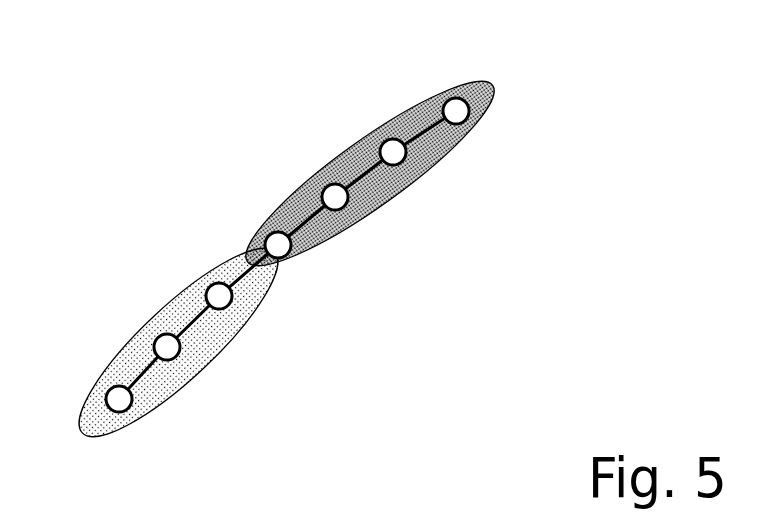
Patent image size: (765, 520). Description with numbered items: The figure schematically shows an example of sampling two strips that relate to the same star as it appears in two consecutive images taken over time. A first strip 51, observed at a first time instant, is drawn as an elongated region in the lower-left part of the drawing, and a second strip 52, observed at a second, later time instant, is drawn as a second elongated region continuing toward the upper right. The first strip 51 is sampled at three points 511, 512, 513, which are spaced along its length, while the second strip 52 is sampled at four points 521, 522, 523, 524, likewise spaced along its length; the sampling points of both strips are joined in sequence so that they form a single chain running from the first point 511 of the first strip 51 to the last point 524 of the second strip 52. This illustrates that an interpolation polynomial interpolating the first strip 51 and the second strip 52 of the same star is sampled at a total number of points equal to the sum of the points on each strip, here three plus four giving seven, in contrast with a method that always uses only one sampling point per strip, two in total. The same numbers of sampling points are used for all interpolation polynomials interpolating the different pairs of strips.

The first strip 51 is at (155, 387).
The second strip 52 is at (378, 188).
The sampling point 511 is at (118, 397).
The sampling point 512 is at (165, 345).
The sampling point 513 is at (217, 293).
The sampling point 521 is at (276, 242).
The sampling point 522 is at (333, 195).
The sampling point 523 is at (391, 150).
The sampling point 524 is at (452, 108).